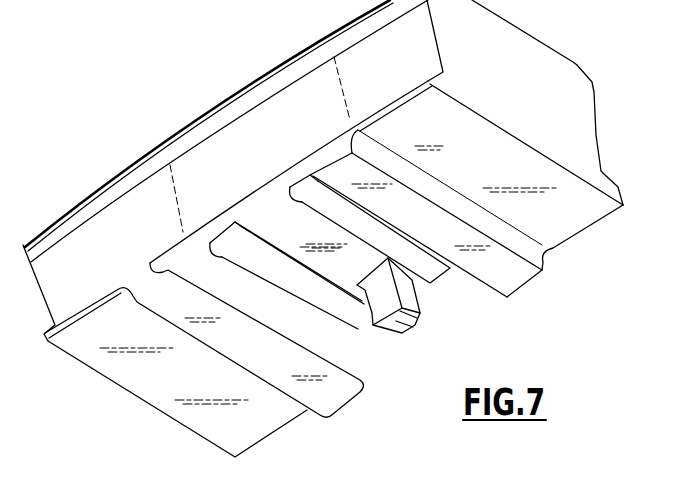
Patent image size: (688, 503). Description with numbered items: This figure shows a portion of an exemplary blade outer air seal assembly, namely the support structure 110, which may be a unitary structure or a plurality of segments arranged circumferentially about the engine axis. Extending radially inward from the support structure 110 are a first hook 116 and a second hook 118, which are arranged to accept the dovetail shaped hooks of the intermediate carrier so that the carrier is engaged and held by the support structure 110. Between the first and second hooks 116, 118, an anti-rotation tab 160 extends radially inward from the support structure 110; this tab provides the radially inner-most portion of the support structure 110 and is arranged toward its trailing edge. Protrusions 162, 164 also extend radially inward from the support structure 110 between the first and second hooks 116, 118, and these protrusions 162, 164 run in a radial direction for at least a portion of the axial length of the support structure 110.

The support structure 110 is at (540, 67).
The first hook 116 is at (157, 273).
The second hook 118 is at (327, 163).
The anti-rotation tab 160 is at (415, 318).
The protrusion 162 is at (357, 328).
The protrusion 164 is at (437, 268).